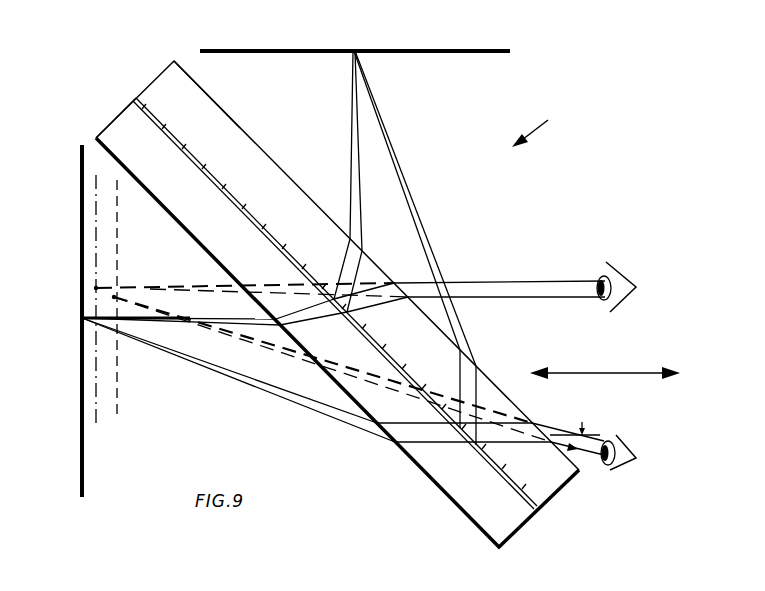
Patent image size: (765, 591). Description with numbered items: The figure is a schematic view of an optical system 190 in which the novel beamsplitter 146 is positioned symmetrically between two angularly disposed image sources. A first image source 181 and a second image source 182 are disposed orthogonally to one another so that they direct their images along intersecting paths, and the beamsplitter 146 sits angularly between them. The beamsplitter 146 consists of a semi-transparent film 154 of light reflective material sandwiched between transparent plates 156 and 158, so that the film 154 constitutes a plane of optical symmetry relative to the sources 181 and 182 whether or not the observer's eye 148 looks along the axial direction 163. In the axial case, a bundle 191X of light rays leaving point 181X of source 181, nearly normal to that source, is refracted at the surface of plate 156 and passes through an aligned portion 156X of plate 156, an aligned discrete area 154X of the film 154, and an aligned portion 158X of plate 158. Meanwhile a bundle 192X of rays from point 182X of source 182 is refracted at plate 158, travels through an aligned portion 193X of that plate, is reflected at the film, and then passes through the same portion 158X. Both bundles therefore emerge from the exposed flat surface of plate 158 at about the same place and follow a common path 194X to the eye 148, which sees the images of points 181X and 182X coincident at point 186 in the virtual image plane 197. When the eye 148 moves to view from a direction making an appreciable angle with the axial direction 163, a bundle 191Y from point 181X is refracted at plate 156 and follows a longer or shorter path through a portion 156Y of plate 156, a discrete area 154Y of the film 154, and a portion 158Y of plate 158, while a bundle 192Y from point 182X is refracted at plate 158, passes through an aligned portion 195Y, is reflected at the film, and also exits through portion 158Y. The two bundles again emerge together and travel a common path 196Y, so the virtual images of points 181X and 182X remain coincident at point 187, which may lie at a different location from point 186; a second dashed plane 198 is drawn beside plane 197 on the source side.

The beamsplitter 146 is at (157, 72).
The semi-transparent film 154 is at (137, 97).
The transparent plate 156 is at (120, 127).
The transparent plate 158 is at (205, 95).
The second image source 182 is at (510, 50).
The point of source 182X is at (356, 50).
The first image source 181 is at (80, 485).
The point of source 181X is at (80, 318).
The virtual image plane 197 is at (96, 425).
The virtual image plane 198 is at (118, 413).
The point 186 is at (94, 287).
The point 187 is at (116, 295).
The bundle of light rays 191X is at (170, 321).
The aligned portion of beamsplitter plate 156X is at (307, 311).
The bundle of light rays 192X is at (351, 169).
The aligned portion of plate 193X is at (347, 255).
The aligned discrete area of film 154X is at (336, 307).
The aligned portion of beamsplitter plate 158X is at (366, 302).
The common path 194X is at (499, 272).
The bundle of light rays 191Y is at (294, 394).
The portion of beamsplitter plate 156Y is at (420, 436).
The bundle of light rays 192Y is at (410, 202).
The aligned portion of plate 195Y is at (462, 375).
The aligned discrete area of film 154Y is at (465, 435).
The aligned portion of plate 158Y is at (505, 435).
The common path 196Y is at (598, 458).
The observer's eye 148 is at (627, 264).
The optical system 190 is at (548, 125).
The axial direction 163 is at (612, 372).